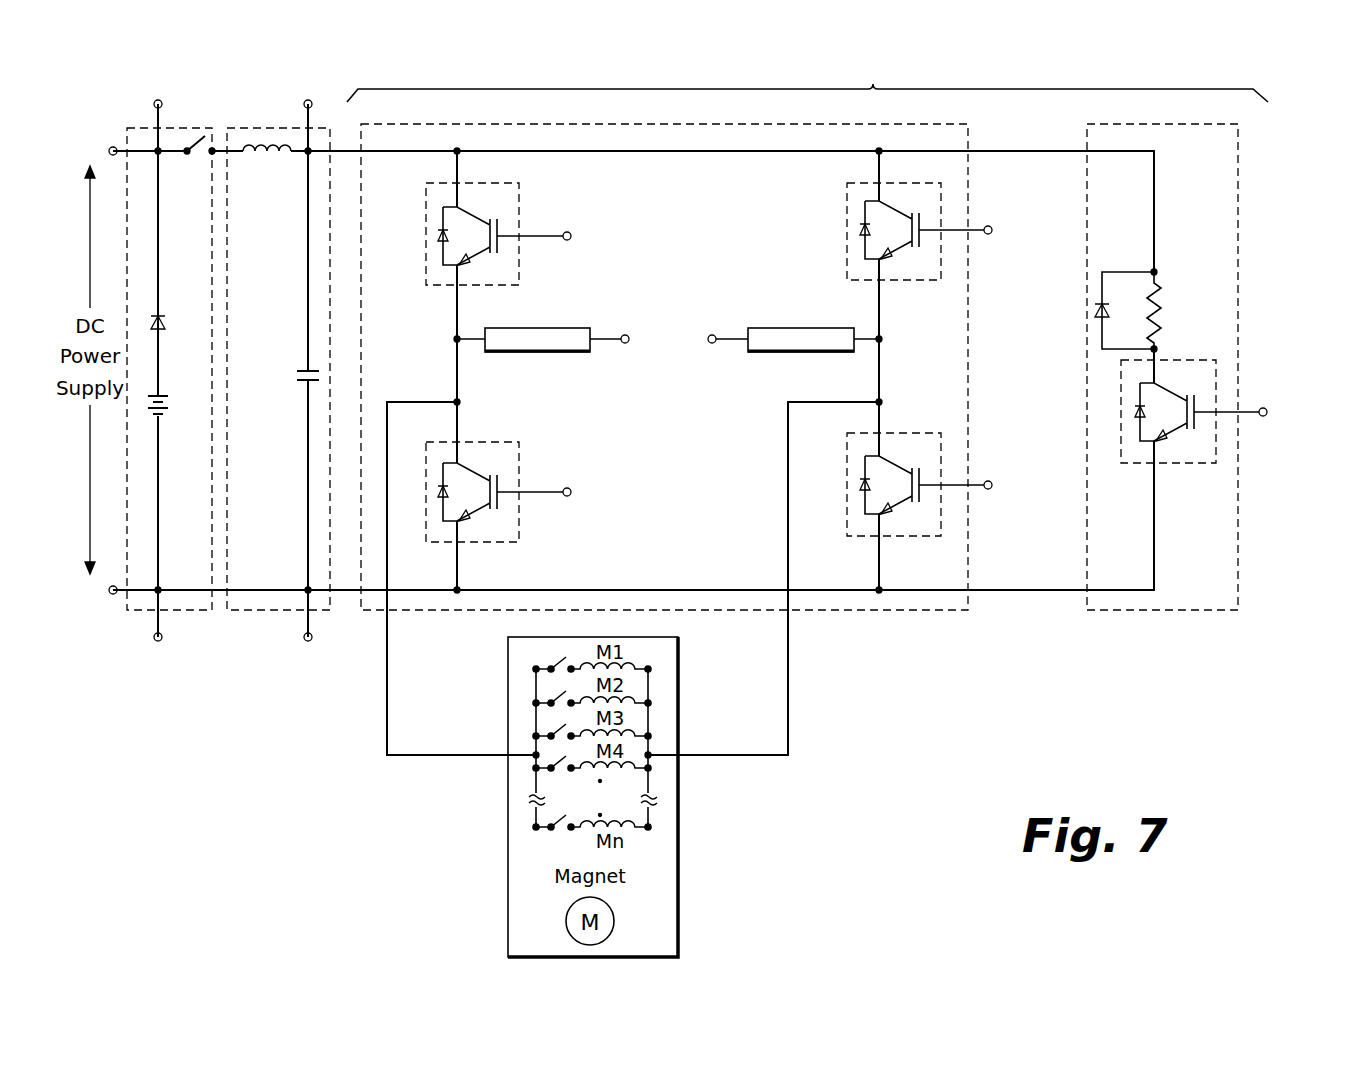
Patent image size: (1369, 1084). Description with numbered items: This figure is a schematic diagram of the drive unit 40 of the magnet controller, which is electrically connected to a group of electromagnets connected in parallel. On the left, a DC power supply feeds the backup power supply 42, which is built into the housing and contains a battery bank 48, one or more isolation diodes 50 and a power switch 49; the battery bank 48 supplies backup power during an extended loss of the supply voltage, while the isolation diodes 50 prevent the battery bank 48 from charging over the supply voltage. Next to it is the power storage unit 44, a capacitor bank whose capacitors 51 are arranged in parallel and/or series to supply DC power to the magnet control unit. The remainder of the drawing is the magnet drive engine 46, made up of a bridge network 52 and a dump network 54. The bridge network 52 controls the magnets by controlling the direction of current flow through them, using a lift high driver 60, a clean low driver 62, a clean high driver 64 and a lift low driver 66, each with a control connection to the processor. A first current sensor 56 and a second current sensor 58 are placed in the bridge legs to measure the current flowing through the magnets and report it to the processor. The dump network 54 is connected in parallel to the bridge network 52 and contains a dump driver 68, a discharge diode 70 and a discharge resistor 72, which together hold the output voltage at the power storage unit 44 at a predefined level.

The drive unit 40 is at (1093, 79).
The backup power supply 42 is at (144, 611).
The power storage unit 44 is at (269, 611).
The magnet drive engine 46 is at (873, 84).
The battery bank 48 is at (180, 410).
The power switch 49 is at (200, 160).
The isolation diode 50 is at (166, 323).
The capacitor 51 is at (298, 373).
The bridge network 52 is at (637, 122).
The dump network 54 is at (1205, 120).
The first current sensor 56 is at (558, 328).
The second current sensor 58 is at (760, 328).
The lift high driver 60 is at (426, 244).
The clean low driver 62 is at (487, 442).
The clean high driver 64 is at (847, 235).
The lift low driver 66 is at (917, 433).
The dump driver 68 is at (1187, 465).
The discharge diode 70 is at (1094, 311).
The discharge resistor 72 is at (1163, 311).